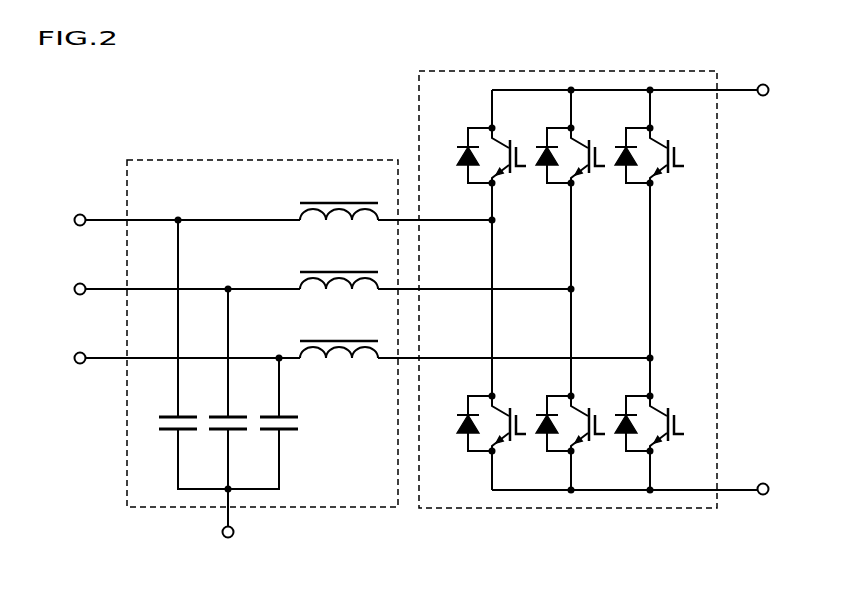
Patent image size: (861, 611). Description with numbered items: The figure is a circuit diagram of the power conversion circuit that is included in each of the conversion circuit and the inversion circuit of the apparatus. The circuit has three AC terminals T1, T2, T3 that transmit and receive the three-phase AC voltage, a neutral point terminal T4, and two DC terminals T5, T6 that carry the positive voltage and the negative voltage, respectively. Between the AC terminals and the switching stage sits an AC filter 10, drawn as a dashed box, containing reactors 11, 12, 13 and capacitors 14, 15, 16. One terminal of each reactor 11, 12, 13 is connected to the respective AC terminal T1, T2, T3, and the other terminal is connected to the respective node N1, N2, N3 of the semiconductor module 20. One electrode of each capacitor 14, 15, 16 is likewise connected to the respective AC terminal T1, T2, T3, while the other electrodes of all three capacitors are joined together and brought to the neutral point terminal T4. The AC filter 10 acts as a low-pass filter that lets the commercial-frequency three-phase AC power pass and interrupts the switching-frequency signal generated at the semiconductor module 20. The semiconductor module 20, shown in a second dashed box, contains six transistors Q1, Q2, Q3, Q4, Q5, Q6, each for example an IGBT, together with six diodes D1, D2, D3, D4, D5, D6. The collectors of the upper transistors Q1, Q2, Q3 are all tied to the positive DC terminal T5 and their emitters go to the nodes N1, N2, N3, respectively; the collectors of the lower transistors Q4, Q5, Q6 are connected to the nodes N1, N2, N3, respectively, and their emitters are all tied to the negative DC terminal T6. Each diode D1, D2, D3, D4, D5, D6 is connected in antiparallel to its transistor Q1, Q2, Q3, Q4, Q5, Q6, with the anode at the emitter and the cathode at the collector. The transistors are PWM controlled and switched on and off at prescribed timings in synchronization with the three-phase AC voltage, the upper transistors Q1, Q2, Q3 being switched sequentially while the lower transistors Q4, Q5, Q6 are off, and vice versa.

The AC filter 10 is at (192, 160).
The reactor 11 is at (312, 202).
The reactor 12 is at (312, 271).
The reactor 13 is at (312, 340).
The capacitor 14 is at (168, 416).
The capacitor 15 is at (218, 416).
The capacitor 16 is at (289, 415).
The semiconductor module 20 is at (488, 71).
The AC terminal T1 is at (77, 214).
The AC terminal T2 is at (77, 283).
The AC terminal T3 is at (77, 352).
The neutral point terminal T4 is at (228, 540).
The DC terminal T5 is at (768, 85).
The DC terminal T6 is at (768, 484).
The diode D1 is at (466, 147).
The diode D2 is at (545, 147).
The diode D3 is at (624, 147).
The diode D4 is at (466, 415).
The diode D5 is at (545, 415).
The diode D6 is at (624, 415).
The transistor Q1 is at (508, 170).
The transistor Q2 is at (587, 170).
The transistor Q3 is at (666, 170).
The transistor Q4 is at (508, 438).
The transistor Q5 is at (587, 438).
The transistor Q6 is at (666, 438).
The node N1 is at (489, 224).
The node N2 is at (568, 292).
The node N3 is at (654, 356).